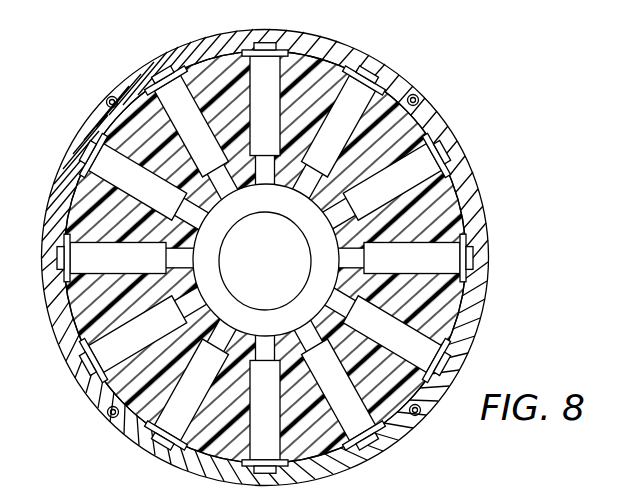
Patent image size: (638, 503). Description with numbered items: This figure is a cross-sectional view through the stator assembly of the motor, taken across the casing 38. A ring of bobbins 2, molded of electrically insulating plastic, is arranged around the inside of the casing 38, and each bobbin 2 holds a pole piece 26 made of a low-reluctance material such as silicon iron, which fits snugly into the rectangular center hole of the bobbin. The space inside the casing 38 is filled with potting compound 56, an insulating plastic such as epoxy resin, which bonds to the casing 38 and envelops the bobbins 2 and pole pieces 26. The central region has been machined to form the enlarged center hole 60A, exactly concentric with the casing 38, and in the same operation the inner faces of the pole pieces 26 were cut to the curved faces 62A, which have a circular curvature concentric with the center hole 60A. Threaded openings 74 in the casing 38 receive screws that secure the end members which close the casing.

The bobbin 2 is at (428, 323).
The pole piece 26 is at (336, 213).
The casing 38 is at (451, 127).
The potting compound 56 is at (453, 213).
The center hole 60A is at (306, 285).
The curved faces of the pole pieces 62A is at (258, 186).
The threaded openings 74 is at (413, 95).